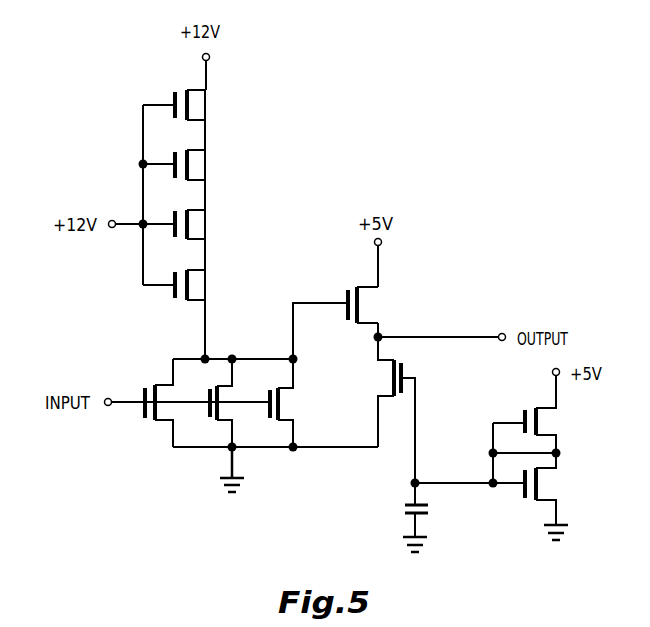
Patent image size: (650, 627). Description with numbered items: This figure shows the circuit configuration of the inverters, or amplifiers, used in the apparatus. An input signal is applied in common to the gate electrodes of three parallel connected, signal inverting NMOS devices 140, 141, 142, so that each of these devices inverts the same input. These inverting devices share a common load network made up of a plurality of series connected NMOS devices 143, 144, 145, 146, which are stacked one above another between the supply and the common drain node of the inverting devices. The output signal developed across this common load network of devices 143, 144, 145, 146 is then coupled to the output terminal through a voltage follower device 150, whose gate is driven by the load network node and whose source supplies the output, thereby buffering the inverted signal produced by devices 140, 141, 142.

The signal inverting NMOS device 140 is at (173, 403).
The signal inverting NMOS device 141 is at (234, 403).
The signal inverting NMOS device 142 is at (325, 422).
The series connected NMOS device 143 is at (242, 120).
The series connected NMOS device 144 is at (240, 182).
The series connected NMOS device 145 is at (240, 240).
The series connected NMOS device 146 is at (240, 298).
The voltage follower device 150 is at (412, 320).